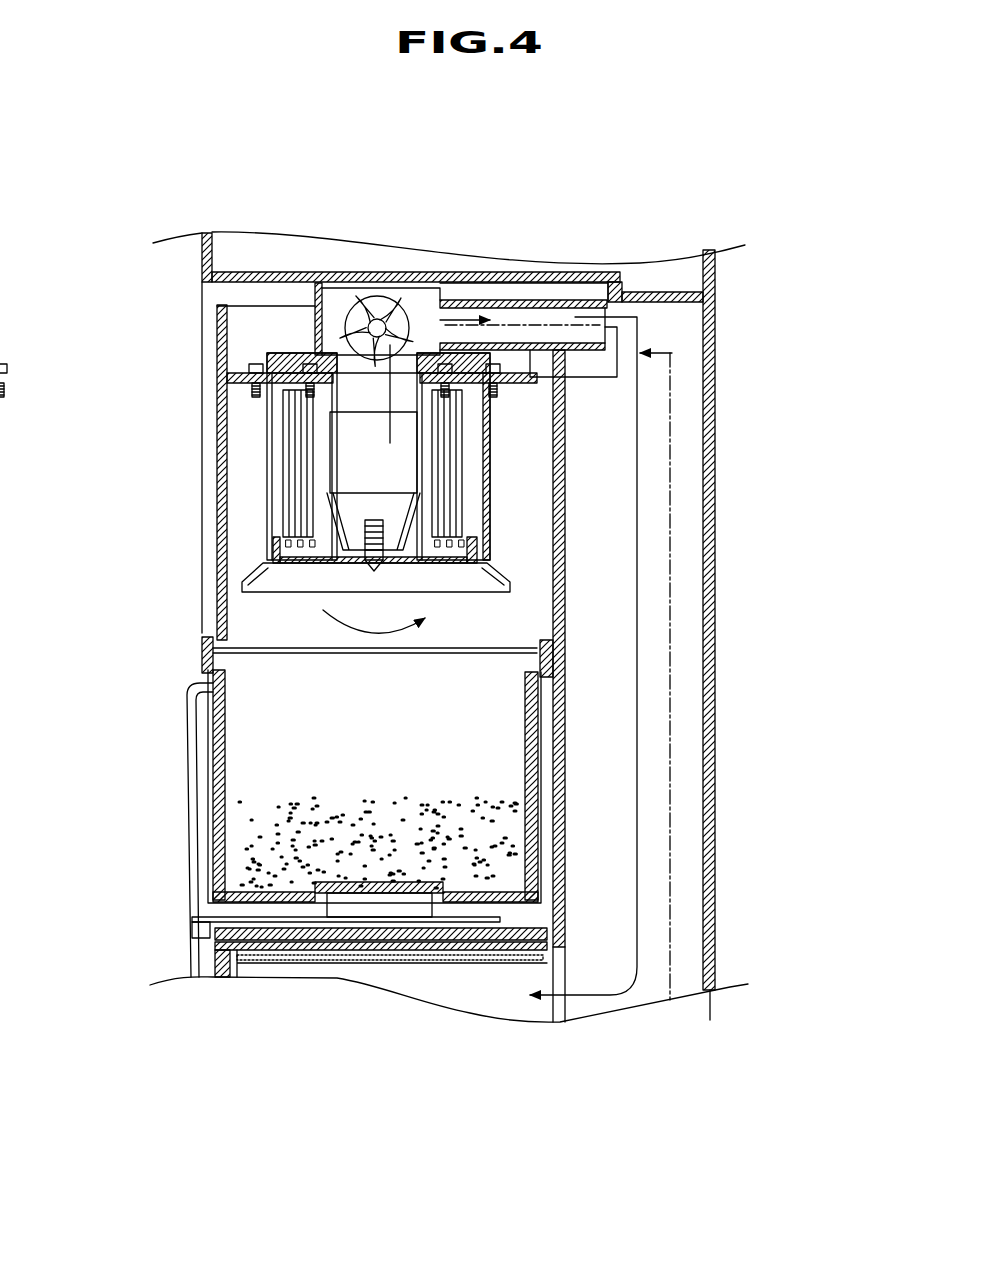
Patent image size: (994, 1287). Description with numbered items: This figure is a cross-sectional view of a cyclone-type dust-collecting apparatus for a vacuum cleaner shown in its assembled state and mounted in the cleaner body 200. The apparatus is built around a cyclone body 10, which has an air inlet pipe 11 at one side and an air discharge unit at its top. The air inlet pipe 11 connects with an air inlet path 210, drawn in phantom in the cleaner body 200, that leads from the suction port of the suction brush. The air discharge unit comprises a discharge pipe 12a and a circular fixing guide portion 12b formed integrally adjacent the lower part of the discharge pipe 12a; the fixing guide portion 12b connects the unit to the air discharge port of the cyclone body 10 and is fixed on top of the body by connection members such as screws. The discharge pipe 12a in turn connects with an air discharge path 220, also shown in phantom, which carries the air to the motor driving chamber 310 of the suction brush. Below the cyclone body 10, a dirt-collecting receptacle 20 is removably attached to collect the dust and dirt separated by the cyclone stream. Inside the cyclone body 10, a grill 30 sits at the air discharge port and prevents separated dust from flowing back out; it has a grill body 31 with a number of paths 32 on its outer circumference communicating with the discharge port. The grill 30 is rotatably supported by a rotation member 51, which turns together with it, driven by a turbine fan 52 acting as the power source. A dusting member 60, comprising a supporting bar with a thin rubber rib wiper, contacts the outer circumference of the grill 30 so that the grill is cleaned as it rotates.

The cyclone body 10 is at (200, 408).
The air inlet pipe 11 is at (548, 325).
The discharge pipe 12a is at (495, 300).
The fixing guide portion 12b is at (280, 357).
The dirt-collecting receptacle 20 is at (210, 748).
The grill 30 is at (112, 450).
The grill body 31 is at (277, 467).
The paths 32 is at (278, 538).
The rotation member 51 is at (447, 312).
The turbine fan 52 is at (357, 300).
The dusting member 60 is at (490, 520).
The cleaner body 200 is at (720, 438).
The air inlet path 210 is at (670, 618).
The air discharge path 220 is at (637, 747).
The motor driving chamber 310 is at (457, 988).